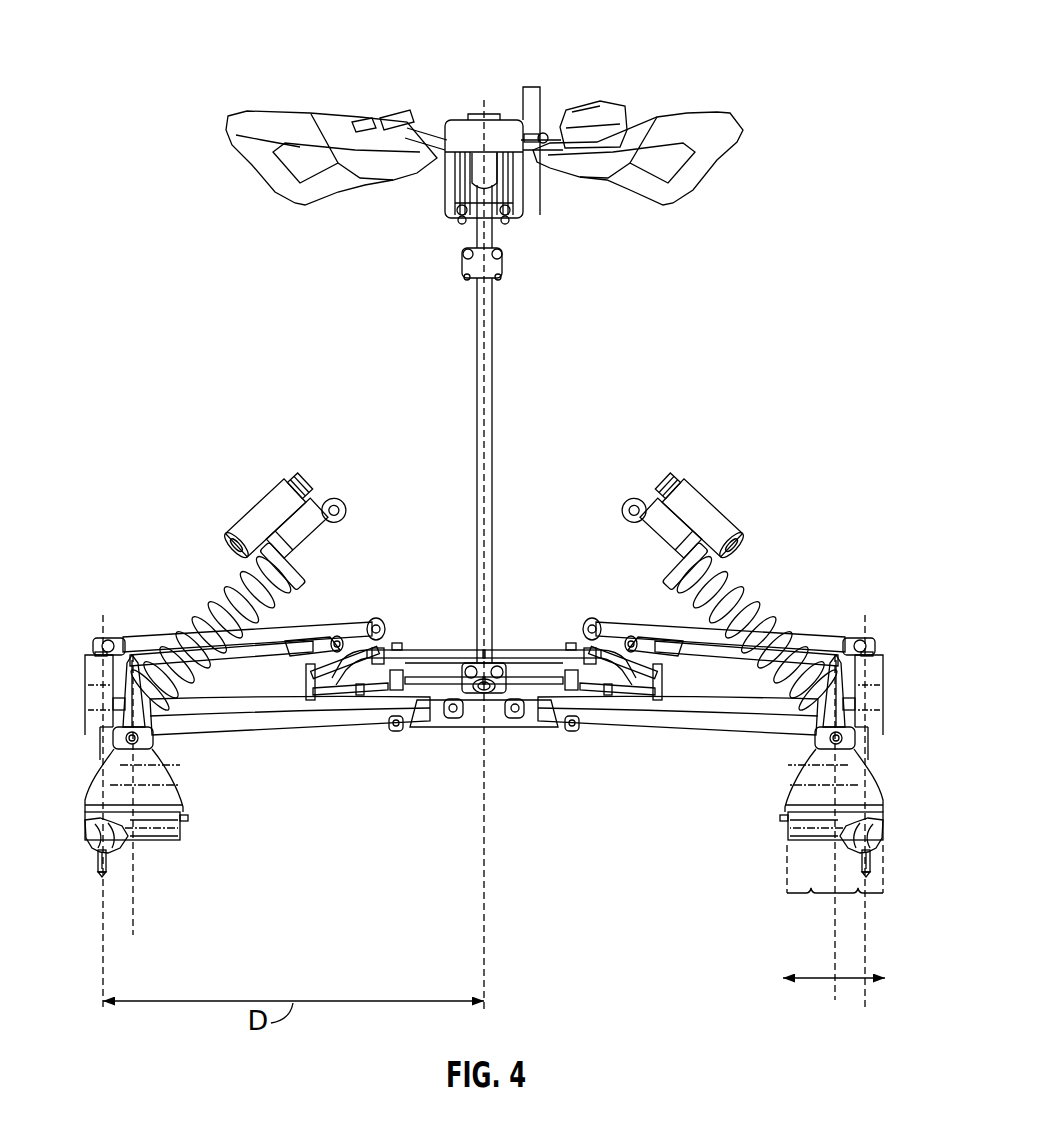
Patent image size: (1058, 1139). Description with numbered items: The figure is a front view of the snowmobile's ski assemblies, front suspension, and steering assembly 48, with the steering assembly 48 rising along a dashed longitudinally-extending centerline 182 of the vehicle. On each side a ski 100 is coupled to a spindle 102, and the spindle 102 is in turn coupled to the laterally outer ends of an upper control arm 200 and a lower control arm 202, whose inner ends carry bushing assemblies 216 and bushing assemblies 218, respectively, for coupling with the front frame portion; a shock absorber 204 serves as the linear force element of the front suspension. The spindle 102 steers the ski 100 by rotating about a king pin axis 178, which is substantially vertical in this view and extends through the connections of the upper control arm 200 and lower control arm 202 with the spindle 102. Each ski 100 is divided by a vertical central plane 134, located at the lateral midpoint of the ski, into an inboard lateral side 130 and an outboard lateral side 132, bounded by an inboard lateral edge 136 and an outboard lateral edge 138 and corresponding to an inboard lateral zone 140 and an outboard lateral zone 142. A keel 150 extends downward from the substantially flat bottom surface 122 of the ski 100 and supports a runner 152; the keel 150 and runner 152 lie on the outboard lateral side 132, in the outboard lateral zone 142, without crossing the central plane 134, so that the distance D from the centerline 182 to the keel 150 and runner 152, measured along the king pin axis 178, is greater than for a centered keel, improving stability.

The steering assembly 48 is at (563, 86).
The ski 100 is at (78, 740).
The spindle 102 is at (102, 670).
The bottom surface 122 is at (163, 847).
The inboard lateral side 130 is at (811, 888).
The outboard lateral side 132 is at (859, 888).
The central plane 134 is at (133, 921).
The inboard lateral edge 136 is at (183, 843).
The outboard lateral edge 138 is at (83, 830).
The inboard lateral zone 140 is at (810, 984).
The outboard lateral zone 142 is at (862, 984).
The keel 150 is at (98, 853).
The runner 152 is at (103, 872).
The king pin axis 178 is at (100, 630).
The longitudinally-extending centerline 182 is at (487, 913).
The upper control arm 200 is at (153, 616).
The lower control arm 202 is at (213, 743).
The shock absorber 204 is at (262, 505).
The bushing assemblies 216 is at (378, 620).
The bushing assemblies 218 is at (395, 731).